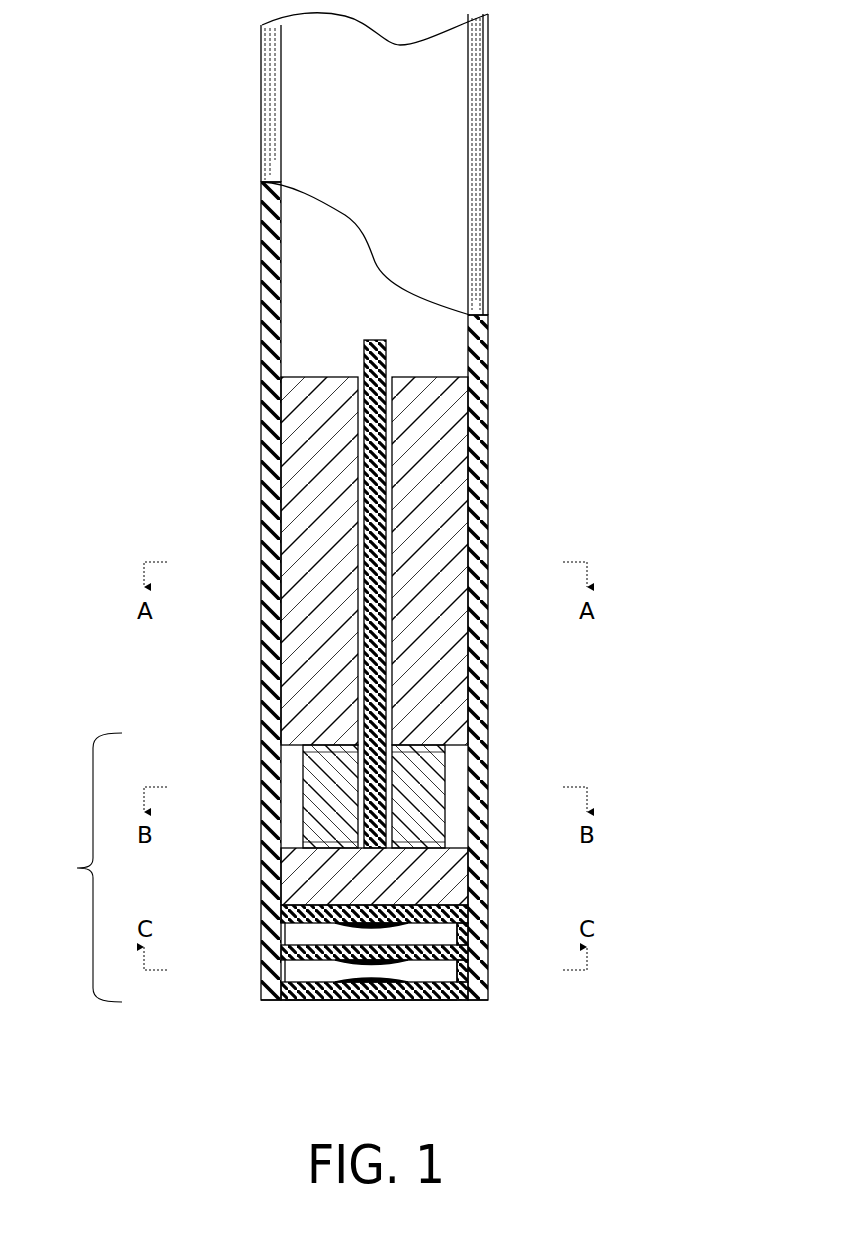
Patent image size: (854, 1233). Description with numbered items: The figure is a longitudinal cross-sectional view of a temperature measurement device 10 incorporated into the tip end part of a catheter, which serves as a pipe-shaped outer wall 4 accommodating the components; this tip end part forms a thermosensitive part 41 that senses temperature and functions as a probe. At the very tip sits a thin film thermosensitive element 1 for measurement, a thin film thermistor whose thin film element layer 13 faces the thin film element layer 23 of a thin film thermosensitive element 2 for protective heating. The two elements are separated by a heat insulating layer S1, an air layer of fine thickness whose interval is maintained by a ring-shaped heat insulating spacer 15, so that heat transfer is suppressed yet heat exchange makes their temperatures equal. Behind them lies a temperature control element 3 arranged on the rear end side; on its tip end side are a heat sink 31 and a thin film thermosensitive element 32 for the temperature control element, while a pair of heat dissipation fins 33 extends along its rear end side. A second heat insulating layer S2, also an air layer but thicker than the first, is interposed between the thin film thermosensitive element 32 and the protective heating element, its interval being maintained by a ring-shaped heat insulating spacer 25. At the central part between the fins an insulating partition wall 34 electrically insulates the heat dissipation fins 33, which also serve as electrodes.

The temperature measurement device 10 is at (567, 500).
The pipe-shaped outer wall 4 is at (453, 143).
The heat dissipation fin 33 is at (290, 520).
The insulating partition wall 34 is at (385, 467).
The temperature control element 3 is at (440, 773).
The heat sink 31 is at (460, 873).
The thin film thermosensitive element for the temperature control element 32 is at (440, 912).
The heat insulating layer S2 is at (447, 937).
The ring-shaped heat insulating spacer 25 is at (285, 937).
The heat insulating layer S1 is at (450, 972).
The ring-shaped heat insulating spacer 15 is at (285, 979).
The thin film thermosensitive element for protective heating 2 is at (432, 1000).
The thin film element layer 23 is at (383, 1000).
The thin film element layer 13 is at (377, 1000).
The thin film thermosensitive element for measurement 1 is at (300, 1000).
The thermosensitive part 41 is at (83, 867).